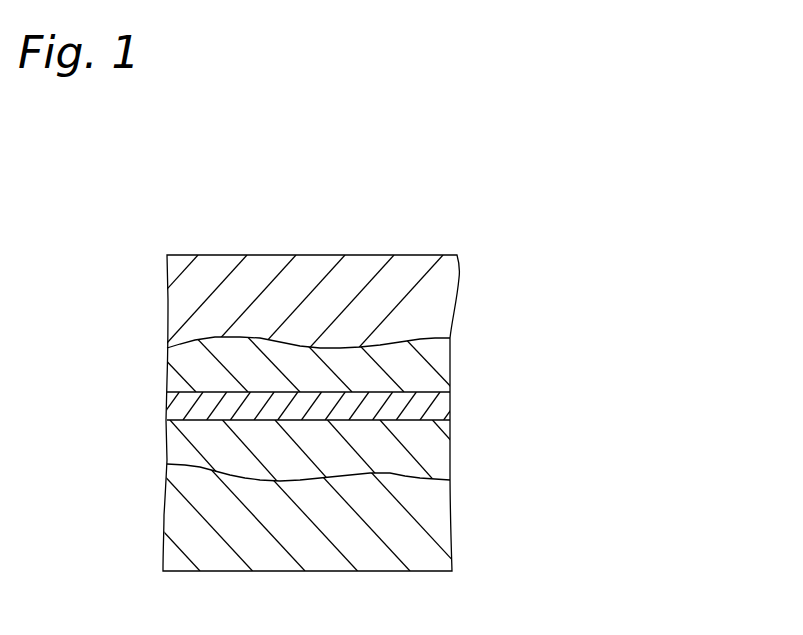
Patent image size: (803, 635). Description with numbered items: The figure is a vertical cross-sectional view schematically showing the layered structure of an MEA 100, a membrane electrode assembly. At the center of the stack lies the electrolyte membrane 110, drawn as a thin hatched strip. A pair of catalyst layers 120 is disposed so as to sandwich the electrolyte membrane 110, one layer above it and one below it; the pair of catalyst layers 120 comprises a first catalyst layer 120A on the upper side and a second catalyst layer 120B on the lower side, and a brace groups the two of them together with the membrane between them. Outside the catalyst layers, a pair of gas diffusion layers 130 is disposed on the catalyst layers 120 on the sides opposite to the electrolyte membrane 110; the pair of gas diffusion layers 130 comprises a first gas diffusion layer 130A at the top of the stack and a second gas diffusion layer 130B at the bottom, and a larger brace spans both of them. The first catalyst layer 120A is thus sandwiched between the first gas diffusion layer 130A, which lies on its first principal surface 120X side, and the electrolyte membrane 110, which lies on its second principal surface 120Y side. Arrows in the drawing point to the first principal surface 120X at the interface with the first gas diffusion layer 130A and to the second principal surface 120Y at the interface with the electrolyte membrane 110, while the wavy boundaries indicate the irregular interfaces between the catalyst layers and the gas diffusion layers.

The MEA 100 is at (396, 222).
The electrolyte membrane 110 is at (427, 415).
The pair of catalyst layers 120 is at (353, 397).
The first catalyst layer 120A is at (430, 378).
The second catalyst layer 120B is at (425, 458).
The first principal surface 120X is at (182, 339).
The second principal surface 120Y is at (180, 399).
The pair of gas diffusion layers 130 is at (394, 413).
The first gas diffusion layer 130A is at (415, 307).
The second gas diffusion layer 130B is at (352, 509).